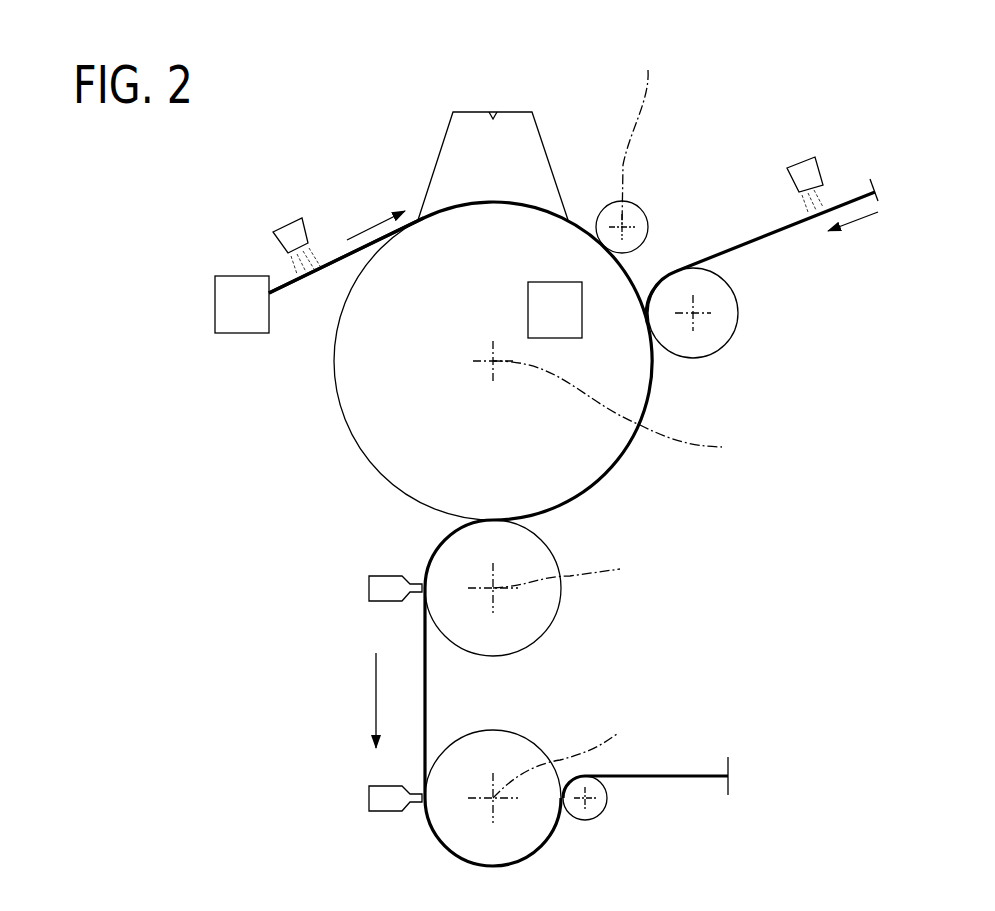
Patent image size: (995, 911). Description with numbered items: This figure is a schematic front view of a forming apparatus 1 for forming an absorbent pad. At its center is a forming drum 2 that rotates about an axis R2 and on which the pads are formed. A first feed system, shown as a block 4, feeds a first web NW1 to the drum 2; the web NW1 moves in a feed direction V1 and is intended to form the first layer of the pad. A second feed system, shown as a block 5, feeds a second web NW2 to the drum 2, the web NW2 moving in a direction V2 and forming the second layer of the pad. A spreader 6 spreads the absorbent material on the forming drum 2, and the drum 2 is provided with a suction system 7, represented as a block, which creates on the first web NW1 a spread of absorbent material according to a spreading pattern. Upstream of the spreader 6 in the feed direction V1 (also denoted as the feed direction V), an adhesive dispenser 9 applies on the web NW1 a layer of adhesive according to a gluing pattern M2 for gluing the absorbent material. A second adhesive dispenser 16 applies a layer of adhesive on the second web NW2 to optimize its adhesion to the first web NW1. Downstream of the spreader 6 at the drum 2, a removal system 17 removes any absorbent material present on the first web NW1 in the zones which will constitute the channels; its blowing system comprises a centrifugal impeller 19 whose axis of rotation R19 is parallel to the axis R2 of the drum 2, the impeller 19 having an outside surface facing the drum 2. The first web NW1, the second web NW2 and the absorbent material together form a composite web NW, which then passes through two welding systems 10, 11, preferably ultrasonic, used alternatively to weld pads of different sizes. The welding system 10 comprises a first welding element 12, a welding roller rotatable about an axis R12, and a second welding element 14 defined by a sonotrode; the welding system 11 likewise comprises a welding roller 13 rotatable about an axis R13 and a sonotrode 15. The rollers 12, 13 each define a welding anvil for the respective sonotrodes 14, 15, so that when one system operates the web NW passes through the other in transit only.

The forming apparatus 1 is at (436, 274).
The forming drum 2 is at (356, 456).
The first feed system 4 is at (249, 320).
The second feed system 5 is at (708, 326).
The spreader 6 is at (554, 148).
The suction system 7 is at (562, 324).
The adhesive dispenser 9 is at (273, 220).
The welding system 10 is at (568, 607).
The welding system 11 is at (433, 838).
The first welding element 12 is at (532, 647).
The first welding element 13 is at (559, 829).
The second welding element 14 is at (364, 595).
The second welding element 15 is at (364, 805).
The second adhesive dispenser 16 is at (800, 153).
The removal system 17 is at (668, 216).
The centrifugal impeller 19 is at (641, 201).
The composite web NW is at (613, 479).
The first web NW1 is at (292, 293).
The second web NW2 is at (774, 249).
The gluing pattern M2 is at (331, 258).
The feed direction V is at (376, 716).
The feed direction of first web V1 is at (363, 226).
The feed direction of second web V2 is at (870, 215).
The axis of rotation of drum R2 is at (624, 411).
The axis of rotation of welding roller 12 R12 is at (578, 571).
The axis of rotation of welding roller 13 R13 is at (572, 754).
The axis of rotation of impeller R19 is at (645, 135).